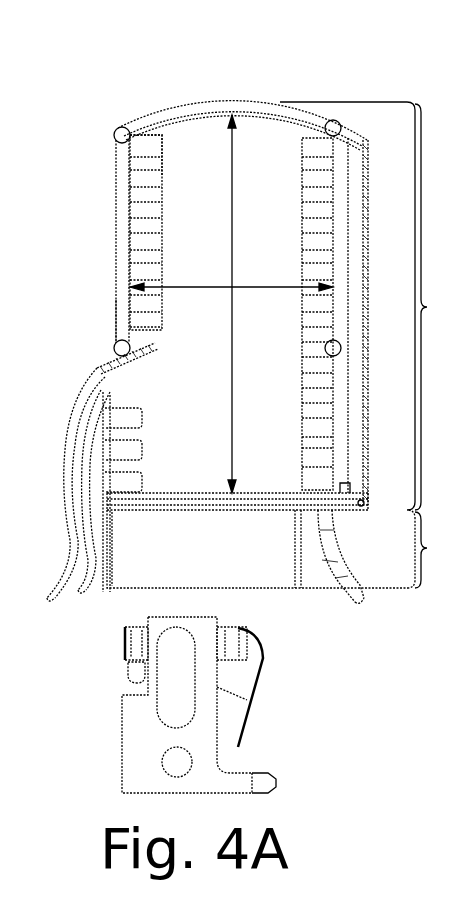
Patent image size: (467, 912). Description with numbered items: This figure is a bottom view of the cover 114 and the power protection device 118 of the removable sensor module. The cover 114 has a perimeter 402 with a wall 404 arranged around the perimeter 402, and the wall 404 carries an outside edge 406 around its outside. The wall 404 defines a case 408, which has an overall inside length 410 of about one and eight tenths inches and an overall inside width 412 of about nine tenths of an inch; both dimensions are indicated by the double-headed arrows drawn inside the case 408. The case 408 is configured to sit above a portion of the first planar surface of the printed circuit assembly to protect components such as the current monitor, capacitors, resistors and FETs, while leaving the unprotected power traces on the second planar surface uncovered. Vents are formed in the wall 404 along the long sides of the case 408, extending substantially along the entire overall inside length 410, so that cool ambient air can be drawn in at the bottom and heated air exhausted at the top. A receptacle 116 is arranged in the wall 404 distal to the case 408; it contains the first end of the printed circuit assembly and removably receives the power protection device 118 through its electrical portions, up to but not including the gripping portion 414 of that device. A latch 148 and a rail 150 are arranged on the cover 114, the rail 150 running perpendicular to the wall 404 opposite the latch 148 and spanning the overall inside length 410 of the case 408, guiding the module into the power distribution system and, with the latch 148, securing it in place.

The cover 114 is at (380, 94).
The receptacle 116 is at (284, 549).
The power protection device 118 is at (257, 760).
The latch 148 is at (91, 366).
The rail 150 is at (363, 140).
The perimeter 402 is at (130, 197).
The wall 404 is at (124, 238).
The outside edge 406 is at (117, 308).
The case 408 is at (438, 307).
The overall inside length 410 is at (230, 410).
The overall inside width 412 is at (220, 287).
The gripping portion 414 is at (278, 783).